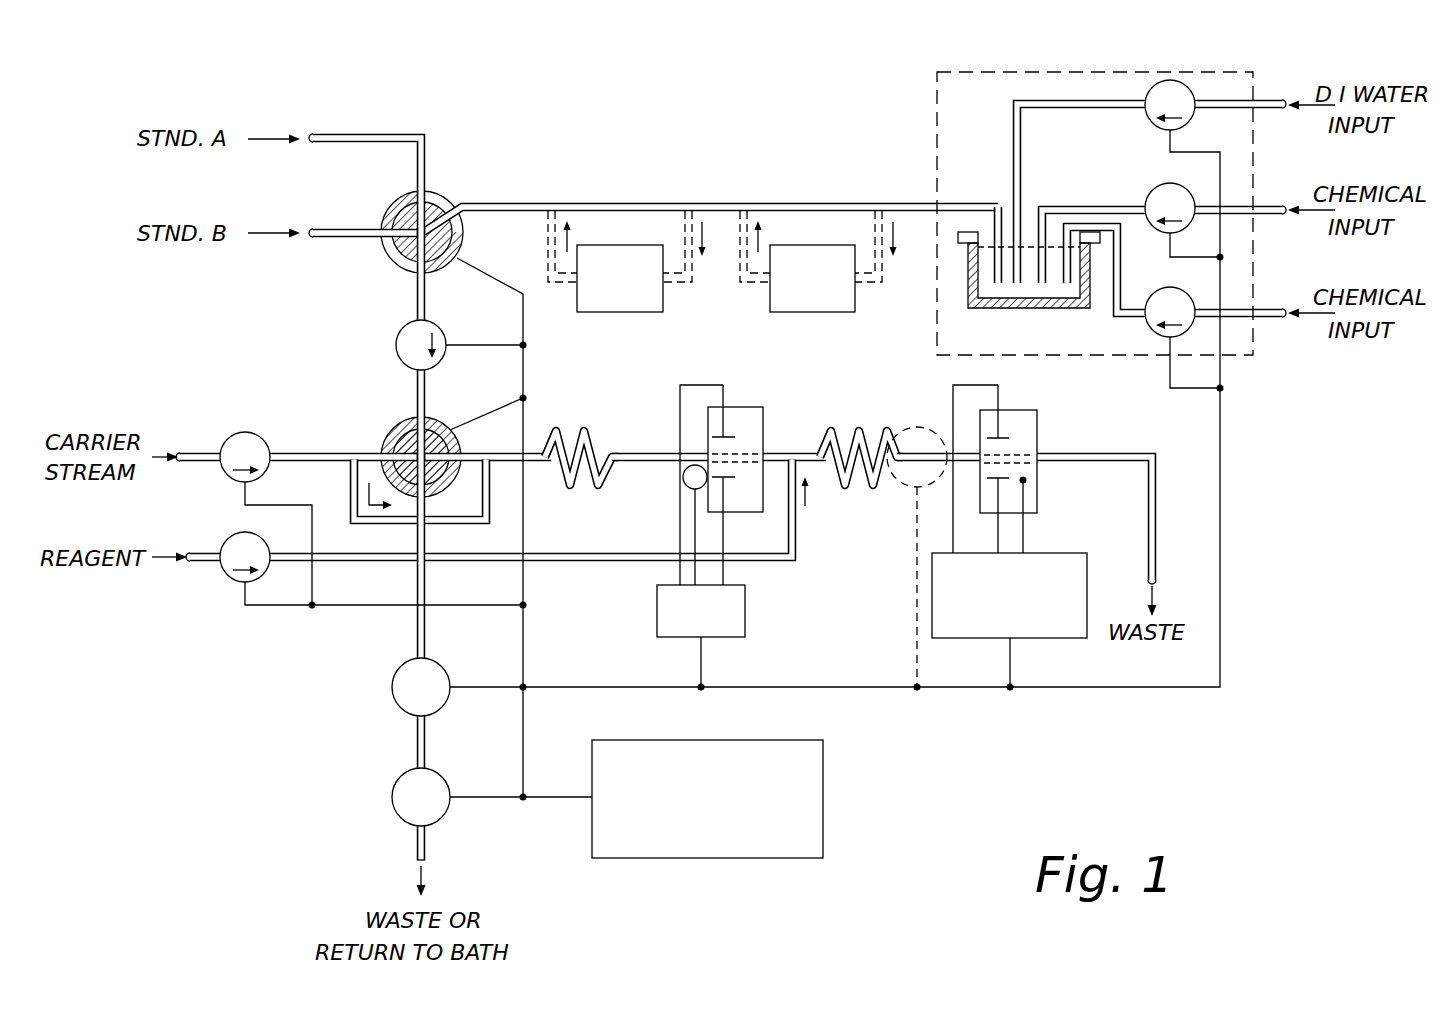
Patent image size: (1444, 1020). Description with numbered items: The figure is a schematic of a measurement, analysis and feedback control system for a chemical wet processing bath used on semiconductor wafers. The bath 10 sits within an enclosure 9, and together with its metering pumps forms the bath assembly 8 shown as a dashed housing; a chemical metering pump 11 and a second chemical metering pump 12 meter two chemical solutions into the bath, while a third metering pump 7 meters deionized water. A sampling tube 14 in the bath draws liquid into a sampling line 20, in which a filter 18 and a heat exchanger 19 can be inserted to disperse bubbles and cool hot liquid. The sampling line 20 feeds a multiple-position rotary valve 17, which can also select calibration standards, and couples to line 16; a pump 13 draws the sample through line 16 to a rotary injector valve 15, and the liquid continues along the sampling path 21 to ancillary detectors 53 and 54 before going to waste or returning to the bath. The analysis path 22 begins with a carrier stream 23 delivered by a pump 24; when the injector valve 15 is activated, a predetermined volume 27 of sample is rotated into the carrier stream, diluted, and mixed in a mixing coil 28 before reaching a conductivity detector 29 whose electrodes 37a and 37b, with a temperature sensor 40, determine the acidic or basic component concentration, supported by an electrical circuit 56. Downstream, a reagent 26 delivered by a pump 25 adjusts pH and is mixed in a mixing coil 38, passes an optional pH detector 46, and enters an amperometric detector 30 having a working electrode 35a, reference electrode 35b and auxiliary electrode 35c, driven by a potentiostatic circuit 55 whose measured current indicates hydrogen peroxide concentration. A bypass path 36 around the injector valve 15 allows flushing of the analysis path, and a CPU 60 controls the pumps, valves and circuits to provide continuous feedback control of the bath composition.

The third metering pump 7 is at (1146, 112).
The bath assembly 8 is at (937, 115).
The enclosure 9 is at (1004, 310).
The bath 10 is at (1032, 247).
The chemical metering pump 11 is at (1146, 195).
The second chemical metering pump 12 is at (1160, 290).
The pump 13 is at (397, 345).
The sampling tube 14 is at (994, 215).
The rotary injector valve 15 is at (395, 425).
The line 16 is at (417, 296).
The rotary valve 17 is at (392, 255).
The filter 18 is at (810, 312).
The heat exchanger 19 is at (617, 312).
The sampling line 20 is at (493, 201).
The sampling path 21 is at (414, 382).
The analysis path 22 is at (458, 440).
The carrier stream 23 is at (215, 451).
The pump 24 is at (245, 432).
The pump 25 is at (228, 578).
The reagent 26 is at (212, 552).
The predetermined volume 27 is at (440, 430).
The mixing coil 28 is at (575, 425).
The conductivity detector 29 is at (765, 420).
The amperometric detector 30 is at (1037, 420).
The working electrode 35a is at (990, 490).
The reference electrode 35b is at (1026, 496).
The auxiliary electrode 35c is at (1005, 425).
The bypass path 36 is at (352, 490).
The electrode 37a is at (723, 407).
The electrode 37b is at (728, 495).
The mixing coil 38 is at (865, 425).
The temperature sensor 40 is at (684, 488).
The pH detector 46 is at (903, 432).
The detector 53 is at (392, 687).
The detector 54 is at (392, 797).
The potentiostatic circuit 55 is at (932, 598).
The electrical circuit 56 is at (657, 610).
The CPU 60 is at (823, 797).